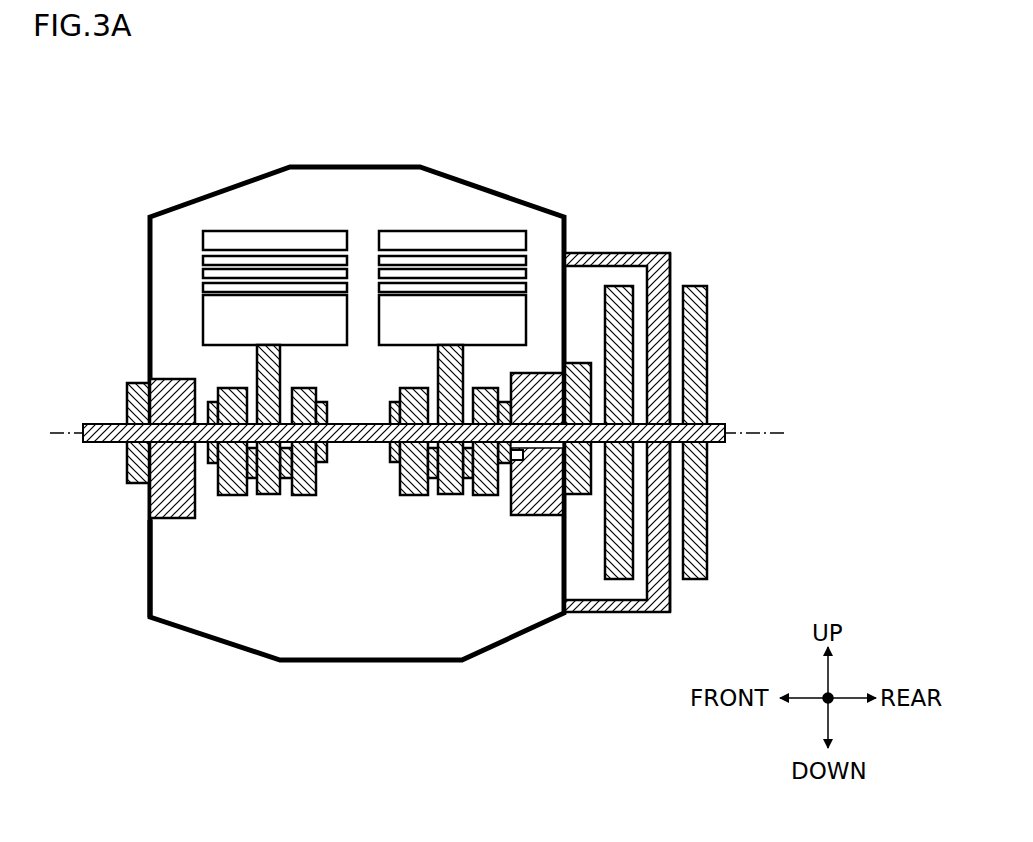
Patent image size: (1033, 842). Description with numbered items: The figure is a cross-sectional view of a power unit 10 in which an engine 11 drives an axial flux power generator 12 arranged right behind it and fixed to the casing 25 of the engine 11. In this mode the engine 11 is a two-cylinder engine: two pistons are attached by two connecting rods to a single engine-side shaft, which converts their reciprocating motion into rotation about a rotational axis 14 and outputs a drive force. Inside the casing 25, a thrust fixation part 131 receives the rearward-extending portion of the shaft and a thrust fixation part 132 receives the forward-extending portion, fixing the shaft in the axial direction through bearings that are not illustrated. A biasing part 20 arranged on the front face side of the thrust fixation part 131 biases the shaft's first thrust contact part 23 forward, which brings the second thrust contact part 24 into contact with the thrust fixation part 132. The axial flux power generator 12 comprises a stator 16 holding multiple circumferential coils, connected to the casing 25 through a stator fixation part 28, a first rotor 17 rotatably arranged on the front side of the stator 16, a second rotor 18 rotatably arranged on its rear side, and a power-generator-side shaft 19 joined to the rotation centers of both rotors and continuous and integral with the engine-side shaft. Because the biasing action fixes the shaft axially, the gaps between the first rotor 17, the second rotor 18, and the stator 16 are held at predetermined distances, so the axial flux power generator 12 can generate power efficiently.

The power unit 10 is at (166, 135).
The engine 11 is at (456, 156).
The axial flux power generator 12 is at (634, 186).
The rotational axis 14 is at (78, 422).
The stator 16 is at (677, 279).
The first rotor 17 is at (622, 580).
The second rotor 18 is at (697, 580).
The power-generator-side shaft 19 is at (720, 423).
The biasing part 20 is at (518, 462).
The first thrust contact part 23 is at (508, 516).
The second thrust contact part 24 is at (232, 496).
The casing 25 is at (150, 575).
The stator fixation part 28 is at (584, 253).
The thrust fixation part 131 is at (557, 516).
The thrust fixation part 132 is at (170, 520).